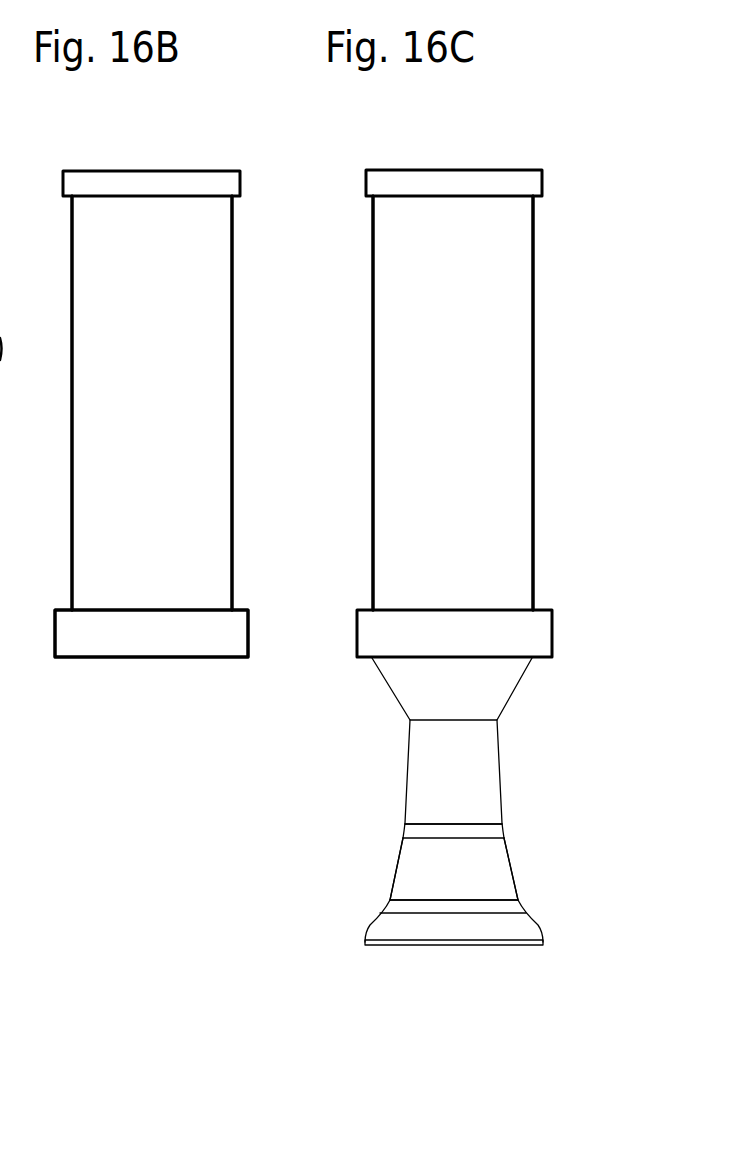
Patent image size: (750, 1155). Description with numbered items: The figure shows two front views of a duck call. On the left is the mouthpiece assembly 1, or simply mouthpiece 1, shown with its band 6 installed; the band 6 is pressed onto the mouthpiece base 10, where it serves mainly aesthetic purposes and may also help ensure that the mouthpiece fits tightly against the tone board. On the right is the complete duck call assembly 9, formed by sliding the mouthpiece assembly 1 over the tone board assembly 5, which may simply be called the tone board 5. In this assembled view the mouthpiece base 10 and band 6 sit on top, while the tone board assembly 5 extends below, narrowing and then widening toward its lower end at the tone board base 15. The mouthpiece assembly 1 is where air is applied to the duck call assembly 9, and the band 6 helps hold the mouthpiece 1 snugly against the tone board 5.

In FIG. 16B, the mouthpiece assembly 1 is at (32, 598).
In FIG. 16C, the tone board assembly 5 is at (540, 722).
In FIG. 16B, the band 6 is at (373, 632).
In FIG. 16C, the duck call assembly 9 is at (572, 260).
In FIG. 16B, the mouthpiece base 10 is at (210, 375).
In FIG. 16C, the mouthpiece base 10 is at (517, 497).
In FIG. 16C, the tone board base 15 is at (428, 865).